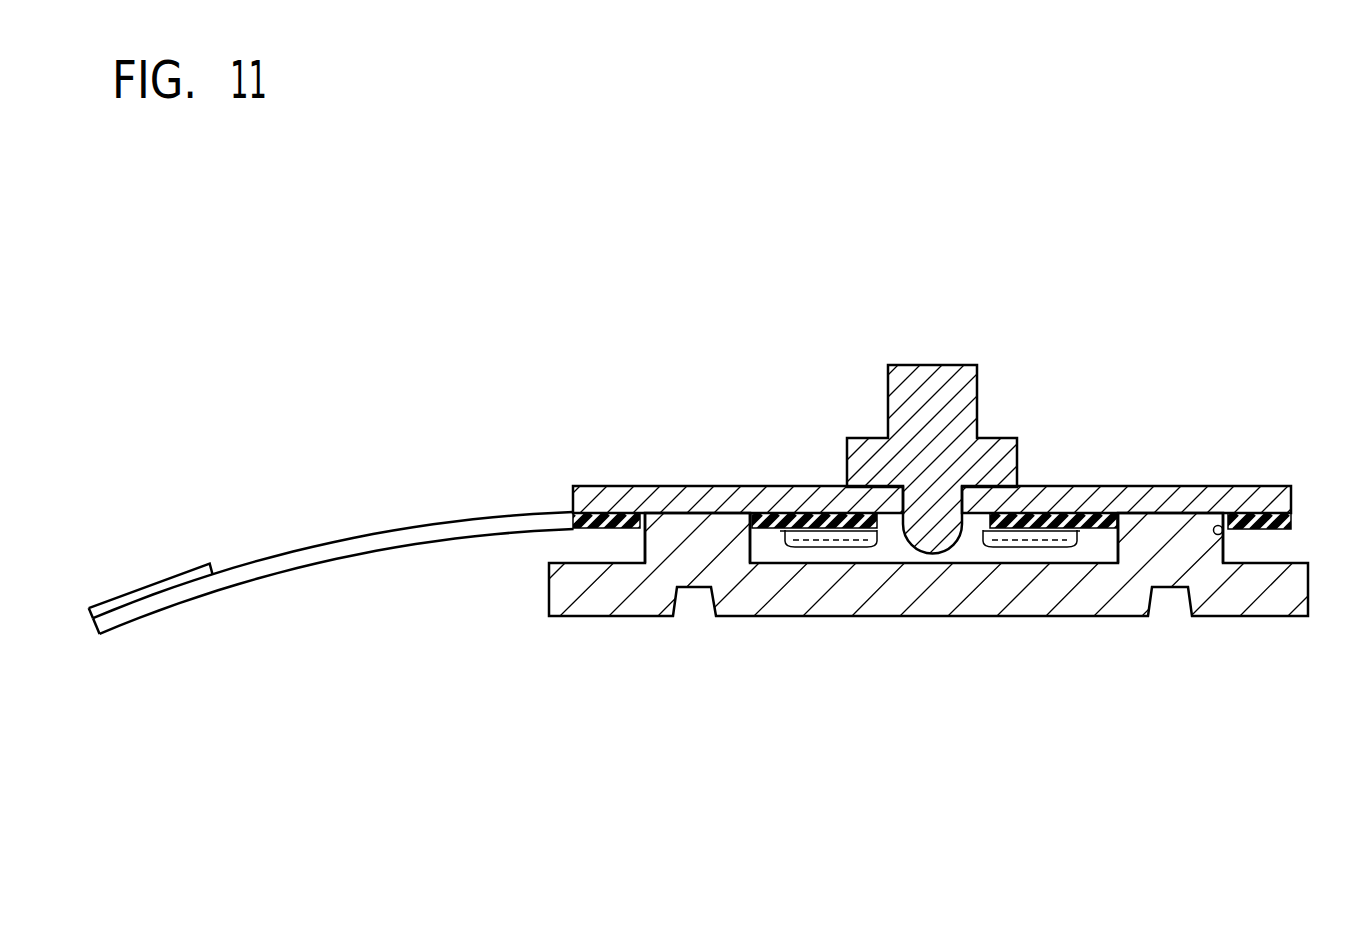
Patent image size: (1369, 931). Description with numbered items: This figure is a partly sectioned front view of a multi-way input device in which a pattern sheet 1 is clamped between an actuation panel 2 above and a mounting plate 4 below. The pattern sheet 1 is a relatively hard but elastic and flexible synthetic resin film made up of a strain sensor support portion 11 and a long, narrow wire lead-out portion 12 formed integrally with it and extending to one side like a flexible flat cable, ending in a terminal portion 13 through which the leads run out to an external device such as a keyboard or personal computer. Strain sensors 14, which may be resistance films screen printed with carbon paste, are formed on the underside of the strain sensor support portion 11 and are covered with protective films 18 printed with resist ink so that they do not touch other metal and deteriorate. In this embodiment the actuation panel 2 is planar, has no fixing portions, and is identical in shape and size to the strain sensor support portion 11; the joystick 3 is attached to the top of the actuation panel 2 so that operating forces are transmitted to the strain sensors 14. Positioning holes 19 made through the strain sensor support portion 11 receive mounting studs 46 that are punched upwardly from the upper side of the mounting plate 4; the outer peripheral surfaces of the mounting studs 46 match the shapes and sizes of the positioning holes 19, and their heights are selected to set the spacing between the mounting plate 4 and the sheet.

The pattern sheet 1 is at (352, 525).
The actuation panel 2 is at (1253, 473).
The joystick 3 is at (960, 349).
The mounting plate 4 is at (1270, 629).
The strain sensor support portion 11 is at (818, 514).
The wire lead-out portion 12 is at (433, 520).
The terminal portion 13 is at (162, 582).
The strain sensor 14 is at (848, 530).
The protective film 18 is at (808, 547).
The positioning hole 19 is at (1224, 533).
The mounting stud 46 is at (705, 542).